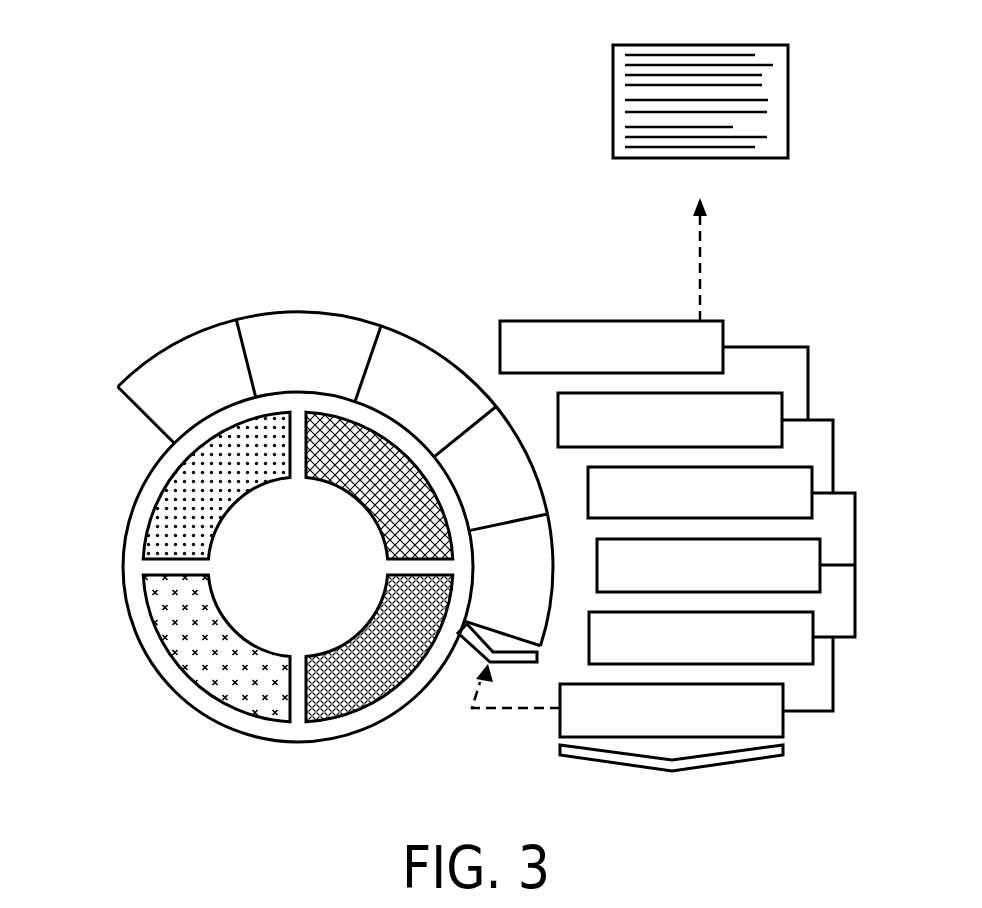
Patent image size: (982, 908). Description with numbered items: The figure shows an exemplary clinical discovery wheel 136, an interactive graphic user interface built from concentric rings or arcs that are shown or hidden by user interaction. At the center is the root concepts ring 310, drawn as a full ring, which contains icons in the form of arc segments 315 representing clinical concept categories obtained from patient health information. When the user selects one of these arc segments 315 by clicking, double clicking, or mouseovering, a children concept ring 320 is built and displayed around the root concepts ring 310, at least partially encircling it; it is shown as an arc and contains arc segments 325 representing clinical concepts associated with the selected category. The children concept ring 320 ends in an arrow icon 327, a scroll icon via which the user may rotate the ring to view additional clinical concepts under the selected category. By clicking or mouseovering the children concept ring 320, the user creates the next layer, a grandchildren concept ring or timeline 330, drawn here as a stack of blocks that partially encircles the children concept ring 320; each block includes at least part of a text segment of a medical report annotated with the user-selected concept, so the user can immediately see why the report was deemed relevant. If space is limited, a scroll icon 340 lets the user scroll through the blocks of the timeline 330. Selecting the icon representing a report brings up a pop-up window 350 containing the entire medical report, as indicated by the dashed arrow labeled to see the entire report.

The clinical discovery wheel 136 is at (116, 93).
The root concepts ring 310 is at (148, 490).
The arc segments 315 is at (388, 523).
The children concept ring 320 is at (165, 330).
The arc segments 325 is at (297, 312).
The arrow icon 327 is at (482, 638).
The timeline 330 is at (578, 331).
The scroll icon 340 is at (783, 731).
The pop-up window 350 is at (613, 100).